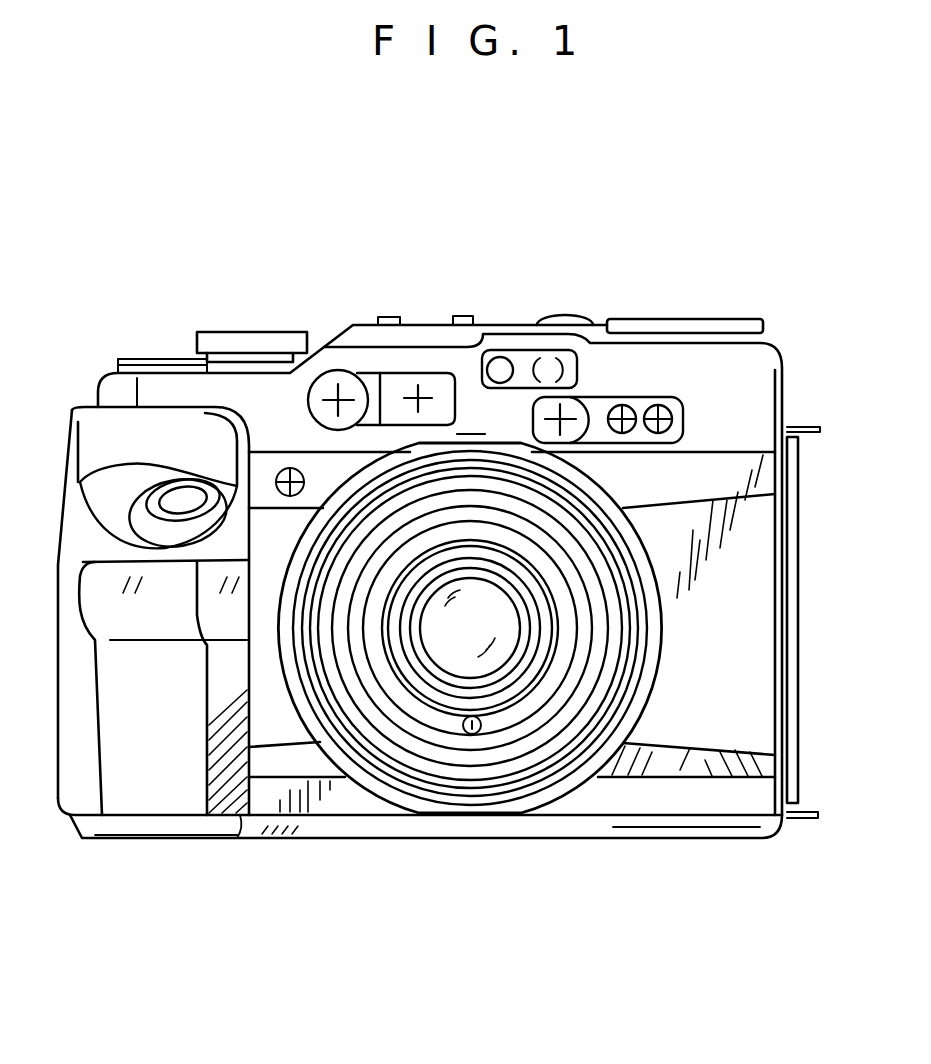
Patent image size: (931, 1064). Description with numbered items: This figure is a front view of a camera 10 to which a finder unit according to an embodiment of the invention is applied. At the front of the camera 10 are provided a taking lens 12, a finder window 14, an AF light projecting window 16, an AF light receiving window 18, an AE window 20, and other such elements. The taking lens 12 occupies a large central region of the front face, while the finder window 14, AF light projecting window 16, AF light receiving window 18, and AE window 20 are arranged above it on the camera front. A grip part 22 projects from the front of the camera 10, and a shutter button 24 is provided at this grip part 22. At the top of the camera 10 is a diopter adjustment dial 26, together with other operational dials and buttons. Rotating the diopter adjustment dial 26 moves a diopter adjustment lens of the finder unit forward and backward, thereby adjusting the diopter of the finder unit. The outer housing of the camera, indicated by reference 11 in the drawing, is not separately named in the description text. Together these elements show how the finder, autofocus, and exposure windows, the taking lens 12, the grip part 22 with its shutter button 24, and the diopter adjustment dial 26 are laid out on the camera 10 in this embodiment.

The camera 10 is at (797, 281).
The camera body 11 is at (753, 375).
The taking lens 12 is at (503, 628).
The finder window 14 is at (501, 360).
The AF light projecting window 16 is at (573, 410).
The AF light receiving window 18 is at (327, 405).
The AE window 20 is at (673, 430).
The grip part 22 is at (151, 770).
The shutter button 24 is at (185, 502).
The diopter adjustment dial 26 is at (548, 323).